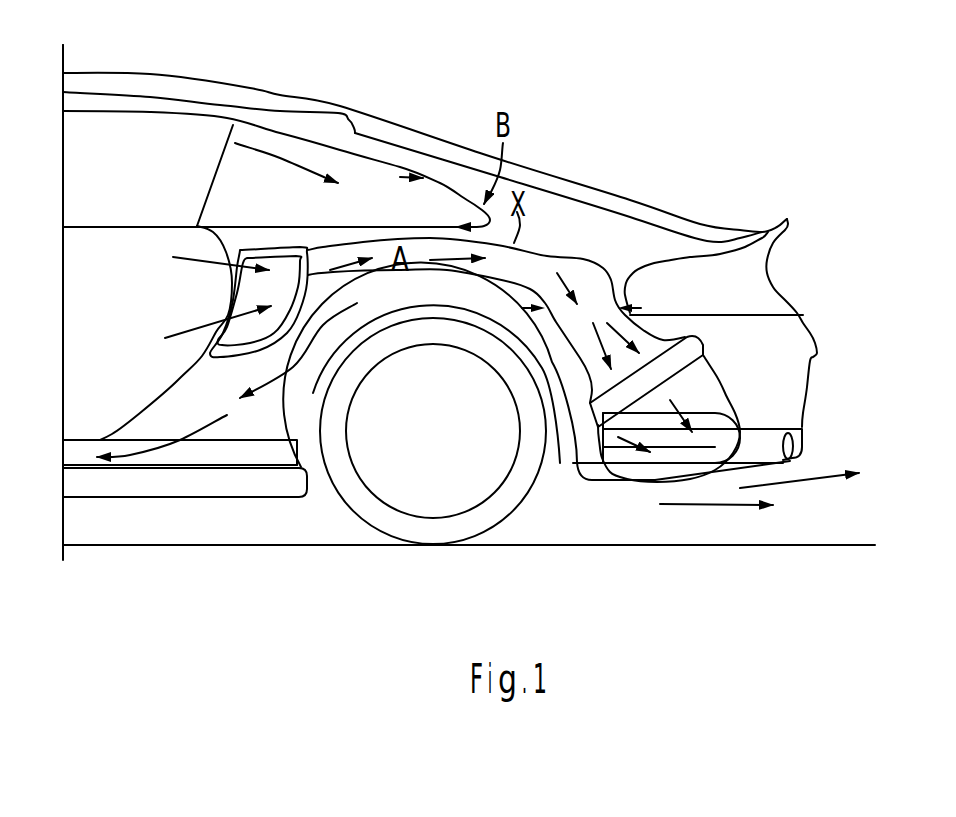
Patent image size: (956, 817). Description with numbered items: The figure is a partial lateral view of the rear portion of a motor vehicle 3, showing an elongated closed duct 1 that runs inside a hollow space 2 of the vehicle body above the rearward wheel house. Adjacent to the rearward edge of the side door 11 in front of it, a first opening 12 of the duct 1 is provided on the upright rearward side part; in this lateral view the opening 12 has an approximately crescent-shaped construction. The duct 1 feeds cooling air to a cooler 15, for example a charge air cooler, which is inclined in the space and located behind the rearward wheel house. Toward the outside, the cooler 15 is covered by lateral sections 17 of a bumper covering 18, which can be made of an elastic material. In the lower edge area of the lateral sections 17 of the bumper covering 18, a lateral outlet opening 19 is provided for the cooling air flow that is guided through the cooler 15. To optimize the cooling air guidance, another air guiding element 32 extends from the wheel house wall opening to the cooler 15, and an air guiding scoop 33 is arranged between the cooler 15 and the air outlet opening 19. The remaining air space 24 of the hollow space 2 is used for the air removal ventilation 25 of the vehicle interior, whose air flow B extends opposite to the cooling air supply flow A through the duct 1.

The elongated closed duct 1 is at (544, 263).
The hollow space 2 is at (496, 308).
The vehicle 3 is at (338, 100).
The side door 11 is at (93, 408).
The first opening 12 is at (247, 290).
The cooler 15 is at (682, 360).
The lateral sections 17 is at (753, 413).
The bumper covering 18 is at (809, 324).
The lateral outlet opening 19 is at (680, 457).
The air space 24 is at (227, 380).
The air removal ventilation 25 is at (286, 167).
The air guiding element 32 is at (662, 337).
The air guiding scoop 33 is at (713, 381).